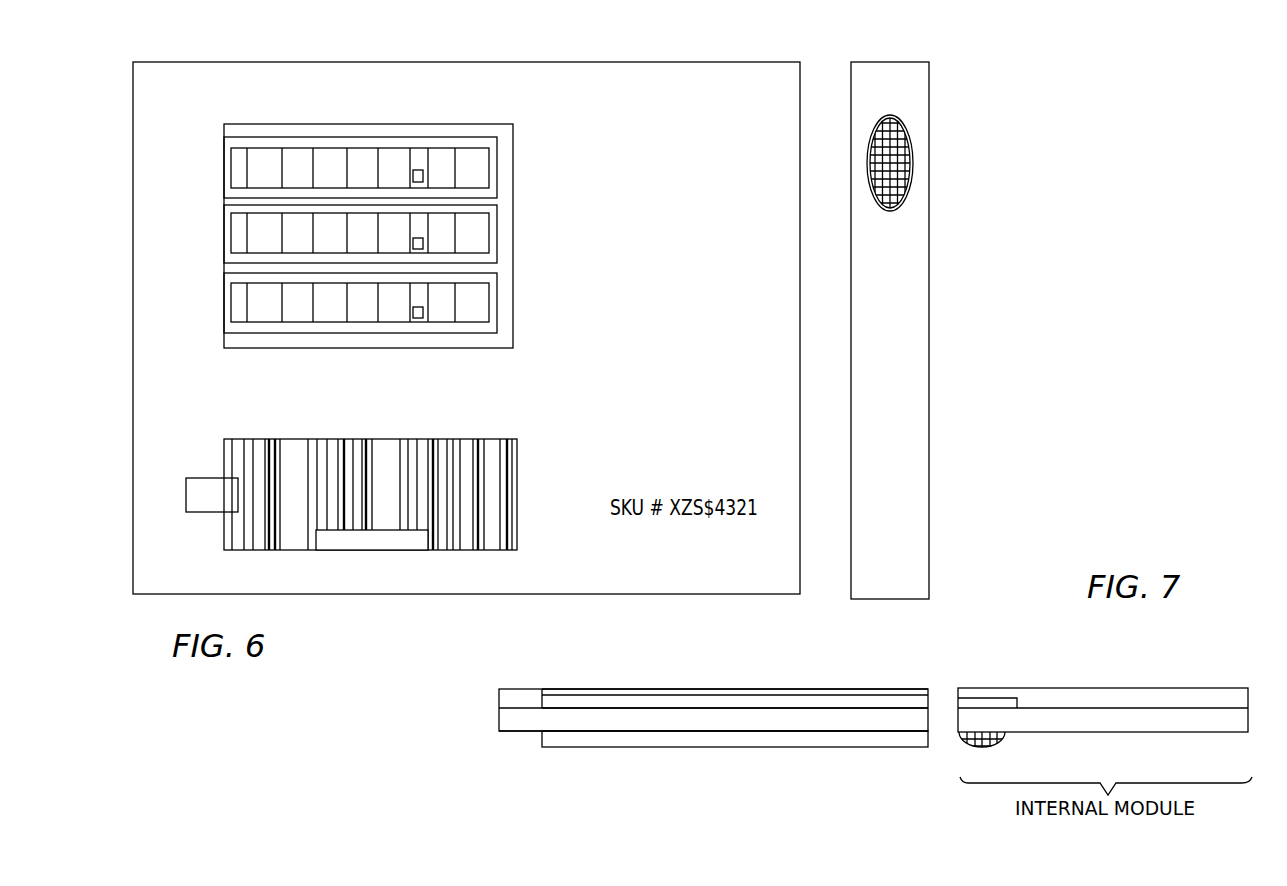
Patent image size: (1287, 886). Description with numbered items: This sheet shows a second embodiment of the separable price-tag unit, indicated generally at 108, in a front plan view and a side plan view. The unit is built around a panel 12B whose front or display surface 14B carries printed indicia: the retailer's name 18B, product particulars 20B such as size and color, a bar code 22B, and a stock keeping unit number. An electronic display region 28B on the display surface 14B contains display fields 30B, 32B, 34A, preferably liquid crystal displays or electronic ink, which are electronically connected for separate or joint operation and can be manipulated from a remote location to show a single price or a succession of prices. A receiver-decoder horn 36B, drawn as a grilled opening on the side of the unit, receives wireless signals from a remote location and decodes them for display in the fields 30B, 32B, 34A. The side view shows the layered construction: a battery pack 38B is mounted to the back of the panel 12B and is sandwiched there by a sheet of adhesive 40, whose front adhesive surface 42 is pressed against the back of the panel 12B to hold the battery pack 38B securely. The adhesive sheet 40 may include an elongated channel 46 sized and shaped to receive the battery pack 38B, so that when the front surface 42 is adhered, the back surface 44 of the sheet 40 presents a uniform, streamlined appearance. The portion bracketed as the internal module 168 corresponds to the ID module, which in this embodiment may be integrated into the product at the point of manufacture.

In FIG. 6, the electronic label tag 108 is at (669, 30).
In FIG. 7, the electronic label tag 108 is at (1000, 666).
In FIG. 6, the panel 12B is at (133, 377).
In FIG. 7, the panel 12B is at (507, 731).
In FIG. 6, the front or display surface 14B is at (427, 328).
In FIG. 7, the front or display surface 14B is at (823, 727).
In FIG. 6, the retailer's name 18B is at (755, 122).
In FIG. 6, the product information field 20B is at (738, 405).
In FIG. 6, the bar code 22B is at (280, 439).
In FIG. 6, the electronic display region 28B is at (325, 229).
In FIG. 7, the electronic display region 28B is at (683, 747).
In FIG. 6, the display field 30B is at (224, 178).
In FIG. 6, the display field 32B is at (224, 245).
In FIG. 6, the display field 34A is at (224, 318).
In FIG. 6, the receiver-decoder horn 36B is at (888, 211).
In FIG. 7, the receiver-decoder horn 36B is at (980, 747).
In FIG. 7, the battery pack 38B is at (543, 690).
In FIG. 7, the sheet of adhesive 40 is at (717, 695).
In FIG. 7, the back surface of the sheet 44 is at (792, 688).
In FIG. 7, the elongated channel 46 is at (1018, 698).
In FIG. 7, the module upper layer 168 is at (1143, 708).
In FIG. 7, the front adhesive surface 42 is at (1193, 712).